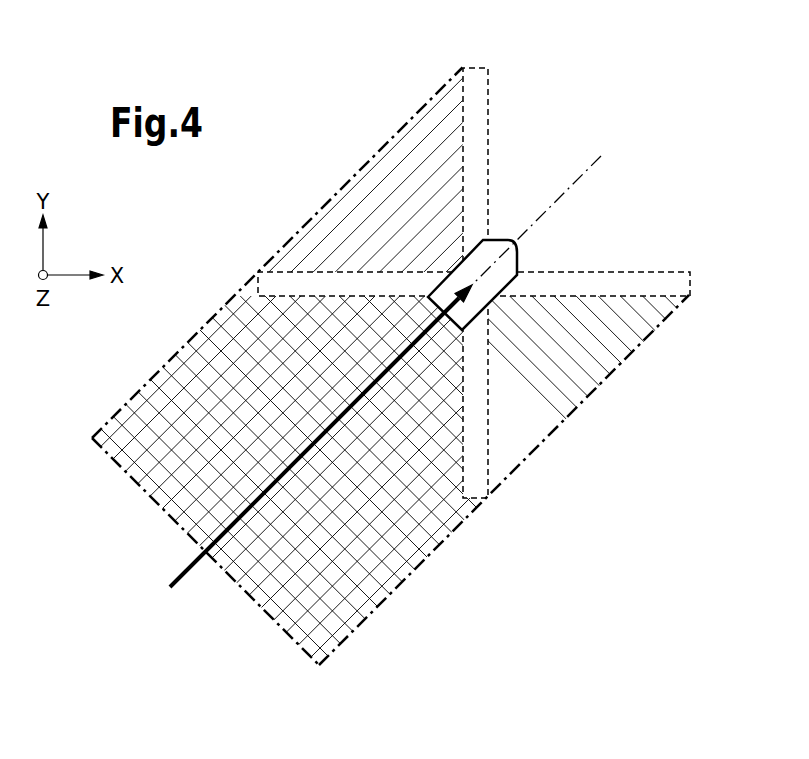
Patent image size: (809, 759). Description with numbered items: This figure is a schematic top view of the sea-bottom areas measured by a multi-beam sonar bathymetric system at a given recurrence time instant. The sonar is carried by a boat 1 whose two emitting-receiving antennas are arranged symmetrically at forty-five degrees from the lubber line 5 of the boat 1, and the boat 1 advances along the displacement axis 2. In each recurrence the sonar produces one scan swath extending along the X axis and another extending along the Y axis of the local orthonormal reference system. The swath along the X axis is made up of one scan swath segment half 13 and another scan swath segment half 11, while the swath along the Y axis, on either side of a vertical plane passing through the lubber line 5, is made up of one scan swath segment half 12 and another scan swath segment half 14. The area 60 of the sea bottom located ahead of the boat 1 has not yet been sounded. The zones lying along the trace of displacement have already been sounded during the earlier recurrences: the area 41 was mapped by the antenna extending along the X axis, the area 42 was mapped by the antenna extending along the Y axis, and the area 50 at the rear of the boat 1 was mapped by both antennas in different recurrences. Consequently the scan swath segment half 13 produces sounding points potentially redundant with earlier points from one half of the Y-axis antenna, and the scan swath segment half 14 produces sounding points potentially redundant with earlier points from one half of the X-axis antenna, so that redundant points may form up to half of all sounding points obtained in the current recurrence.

The boat 1 is at (518, 260).
The displacement axis 2 is at (192, 565).
The lubber line 5 is at (591, 165).
The scan swath segment half 11 is at (690, 282).
The scan swath segment half 12 is at (486, 92).
The scan swath segment half 13 is at (303, 272).
The scan swath segment half 14 is at (487, 465).
The area 41 is at (597, 377).
The area 42 is at (378, 176).
The area 50 is at (148, 407).
The area 60 is at (540, 133).